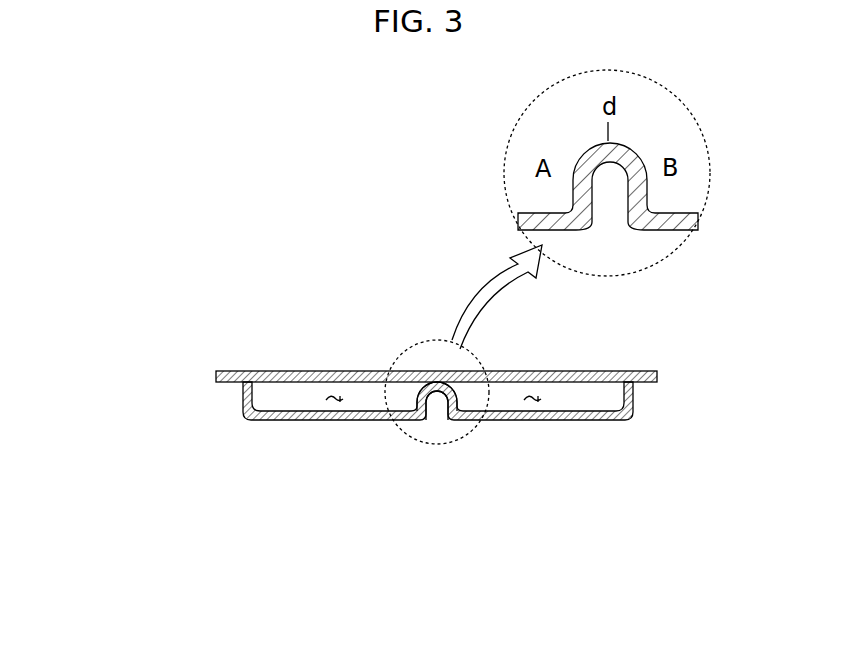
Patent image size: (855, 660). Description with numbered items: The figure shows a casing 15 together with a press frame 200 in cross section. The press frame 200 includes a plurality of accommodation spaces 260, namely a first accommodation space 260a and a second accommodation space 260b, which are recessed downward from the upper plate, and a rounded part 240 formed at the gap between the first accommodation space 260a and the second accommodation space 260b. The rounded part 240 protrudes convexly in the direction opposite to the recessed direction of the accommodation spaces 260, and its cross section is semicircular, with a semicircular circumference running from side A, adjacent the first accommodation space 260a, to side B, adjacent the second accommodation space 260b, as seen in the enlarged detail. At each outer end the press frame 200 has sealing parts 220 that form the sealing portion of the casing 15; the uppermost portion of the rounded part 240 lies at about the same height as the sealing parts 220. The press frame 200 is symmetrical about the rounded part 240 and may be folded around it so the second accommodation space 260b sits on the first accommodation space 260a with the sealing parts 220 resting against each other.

The casing 15 is at (398, 371).
The press frame 200 is at (196, 380).
The sealing parts 220 is at (228, 408).
The rounded part 240 is at (437, 422).
The first accommodation space 260a is at (340, 422).
The second accommodation space 260b is at (533, 422).
The accommodation spaces 260 is at (568, 558).